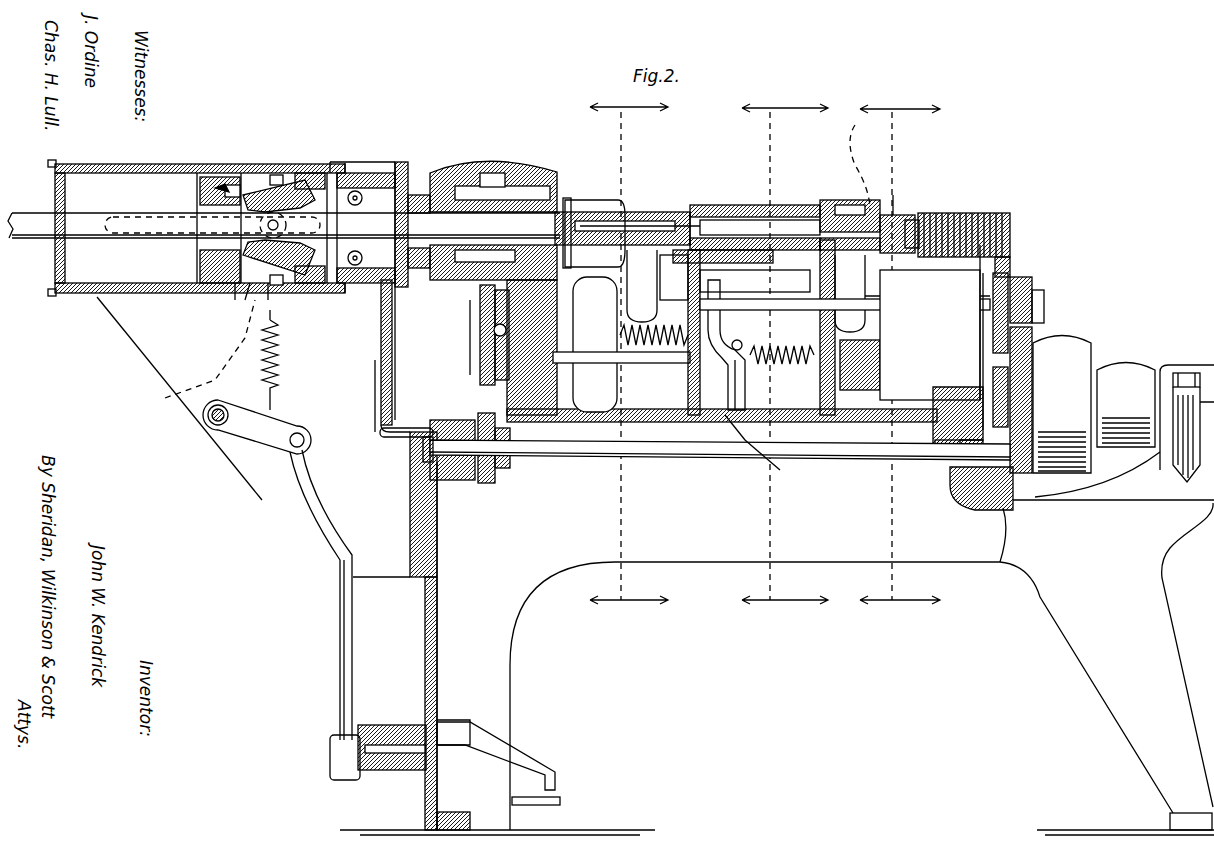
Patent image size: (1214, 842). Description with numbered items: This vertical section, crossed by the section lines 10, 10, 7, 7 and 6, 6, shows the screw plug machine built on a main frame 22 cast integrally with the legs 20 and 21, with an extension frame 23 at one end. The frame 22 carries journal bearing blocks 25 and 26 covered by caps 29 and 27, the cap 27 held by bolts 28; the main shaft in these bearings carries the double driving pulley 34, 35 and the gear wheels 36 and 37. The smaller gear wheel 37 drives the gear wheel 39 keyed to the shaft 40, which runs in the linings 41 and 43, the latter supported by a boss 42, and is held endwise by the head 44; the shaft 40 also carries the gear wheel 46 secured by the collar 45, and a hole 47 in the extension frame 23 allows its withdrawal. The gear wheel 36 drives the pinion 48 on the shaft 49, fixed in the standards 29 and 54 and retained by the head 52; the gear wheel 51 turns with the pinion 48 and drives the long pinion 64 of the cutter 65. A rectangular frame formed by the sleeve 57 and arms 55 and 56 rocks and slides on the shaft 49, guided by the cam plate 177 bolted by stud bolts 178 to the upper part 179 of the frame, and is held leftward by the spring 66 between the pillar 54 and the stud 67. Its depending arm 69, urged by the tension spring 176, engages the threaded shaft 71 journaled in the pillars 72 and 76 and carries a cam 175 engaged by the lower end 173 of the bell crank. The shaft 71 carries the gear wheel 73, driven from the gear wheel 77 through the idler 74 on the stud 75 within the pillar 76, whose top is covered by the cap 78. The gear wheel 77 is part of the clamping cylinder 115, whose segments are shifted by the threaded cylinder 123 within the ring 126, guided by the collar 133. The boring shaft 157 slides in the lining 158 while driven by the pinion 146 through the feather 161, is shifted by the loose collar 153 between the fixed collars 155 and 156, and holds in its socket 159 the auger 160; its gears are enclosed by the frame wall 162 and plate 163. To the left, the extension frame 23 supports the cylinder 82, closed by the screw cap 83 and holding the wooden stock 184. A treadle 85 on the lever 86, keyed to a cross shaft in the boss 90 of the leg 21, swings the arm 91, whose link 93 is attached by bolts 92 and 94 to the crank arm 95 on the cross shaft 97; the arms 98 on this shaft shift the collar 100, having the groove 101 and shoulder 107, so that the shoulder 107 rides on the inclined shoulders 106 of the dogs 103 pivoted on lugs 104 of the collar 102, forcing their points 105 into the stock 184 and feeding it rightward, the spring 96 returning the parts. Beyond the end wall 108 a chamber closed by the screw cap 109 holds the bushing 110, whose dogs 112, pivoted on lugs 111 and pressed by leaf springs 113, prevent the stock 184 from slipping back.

The section line 10 10 is at (629, 356).
The section line 7 7 is at (785, 356).
The section line 6 6 is at (900, 355).
The horizontal cylinder 82 is at (97, 295).
The screw cap 83 is at (60, 268).
The wooden stock 184 is at (62, 290).
The dogs 112 is at (284, 225).
The inwardly projecting lugs 104 is at (218, 175).
The collar 102 is at (195, 185).
The dogs 103 is at (238, 185).
The circumferential groove 101 is at (275, 183).
The collar 100 is at (290, 180).
The inclined shoulder 106 is at (310, 175).
The point 105 is at (325, 175).
The inwardly projecting shoulder 107 is at (240, 292).
The end wall 108 is at (272, 290).
The bushing 110 is at (345, 290).
The inwardly projecting lugs 111 is at (370, 165).
The leaf springs 113 is at (390, 175).
The screw cap 109 is at (387, 320).
The cylinder 123 is at (400, 290).
The collar 133 is at (415, 190).
The ring 126 is at (428, 195).
The cap 78 is at (510, 168).
The gear wheel 77 is at (490, 170).
The cylinder 115 is at (540, 172).
The pillar 76 is at (545, 330).
The stud 75 is at (480, 305).
The idler 74 is at (480, 330).
The gear wheel 73 is at (480, 357).
The standard 54 is at (621, 366).
The spring 66 is at (665, 350).
The radially projecting arm 56 is at (642, 286).
The lining 158 is at (745, 200).
The sleeve 57 is at (681, 332).
The stud 67 is at (730, 415).
The arm 69 is at (745, 335).
The cam 175 is at (748, 370).
The tension spring 176 is at (790, 345).
The stud bolts 178 is at (800, 275).
The screw threaded shaft 71 is at (840, 370).
The pillar 72 is at (850, 415).
The radially projecting arm 55 is at (850, 293).
The frame wall 162 is at (865, 300).
The detachable plate 163 is at (870, 290).
The shaft 49 is at (930, 335).
The cap 29 is at (950, 340).
The journal bearing block 25 is at (945, 410).
The cutter 65 is at (590, 200).
The auger 160 is at (640, 212).
The socket 159 is at (685, 212).
The shaft 157 is at (758, 205).
The cam plate 177 is at (775, 235).
The upper part of frame 179 is at (828, 200).
The gear pinion 146 is at (850, 205).
The key or feather 161 is at (847, 158).
The fixed collar 155 is at (890, 195).
The collar 153 is at (905, 215).
The fixed collar 156 is at (912, 220).
The long gear pinion 64 is at (985, 215).
The gear wheel 51 is at (1010, 265).
The gear pinion 48 is at (1010, 280).
The head 52 is at (1032, 310).
The gear wheel 37 is at (1032, 345).
The gear wheel 36 is at (1020, 480).
The driving pulley 34 is at (1062, 405).
The driving pulley 35 is at (1126, 405).
The bolts 28 is at (1180, 375).
The cap 27 is at (1192, 373).
The journal bearing block 26 is at (1124, 442).
The leg 20 is at (777, 667).
The main frame 22 is at (742, 679).
The leg 21 is at (422, 625).
The gear wheel 39 is at (975, 508).
The Babbitt metal lining 41 is at (950, 485).
The Babbitt metal lining 43 is at (455, 420).
The gear wheel 46 is at (490, 483).
The collar 45 is at (505, 467).
The shaft 40 is at (720, 462).
The head 44 is at (420, 450).
The hole 47 is at (395, 437).
The boss 42 is at (455, 480).
The lower end of bell crank lever 173 is at (756, 453).
The bolt 94 is at (290, 448).
The cross shaft 97 is at (205, 420).
The crank arm 95 is at (245, 437).
The arms 98 is at (175, 403).
The spring 96 is at (263, 360).
The extension frame 23 is at (260, 500).
The link 93 is at (338, 660).
The bolt 92 is at (328, 762).
The arm 91 is at (385, 772).
The boss 90 is at (430, 712).
The lever 86 is at (490, 760).
The treadle 85 is at (560, 802).